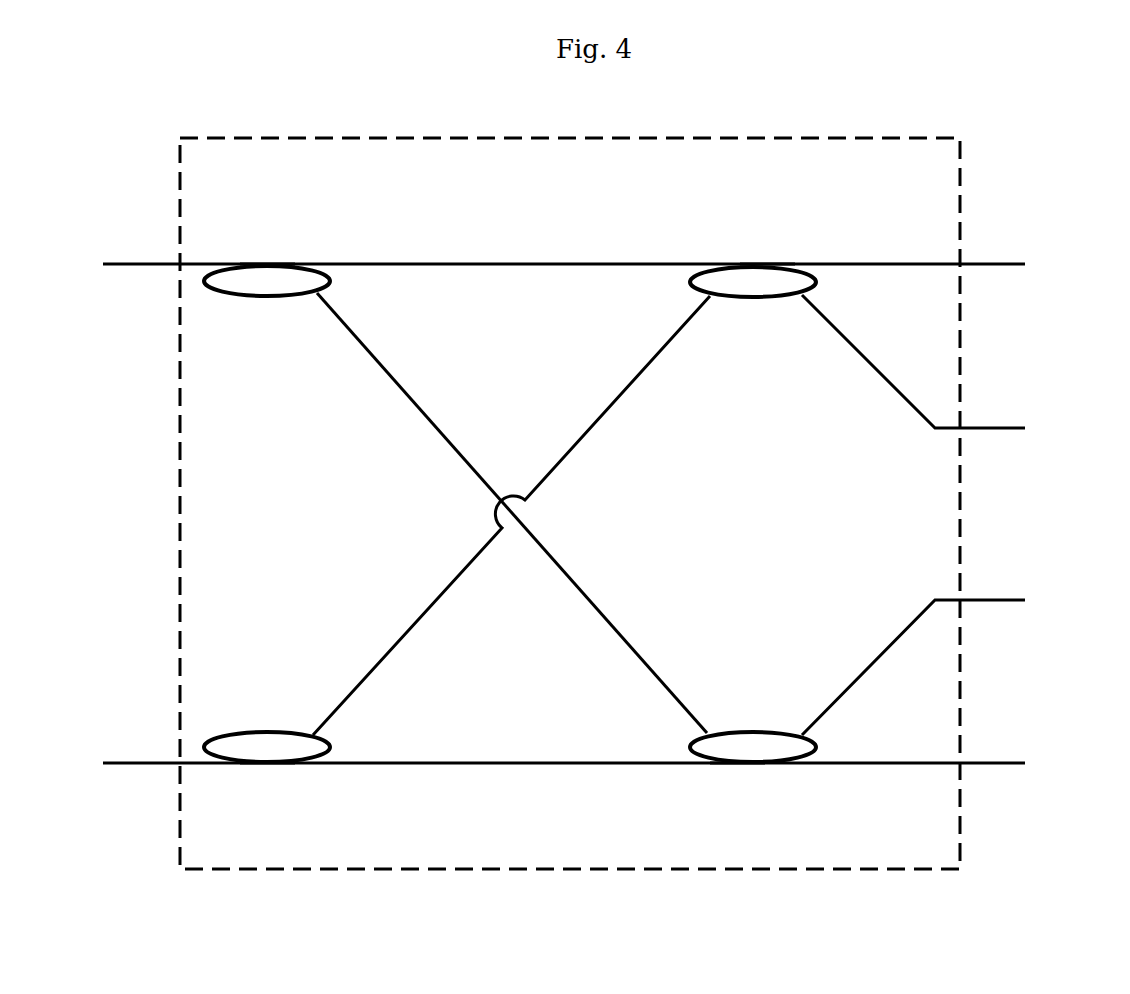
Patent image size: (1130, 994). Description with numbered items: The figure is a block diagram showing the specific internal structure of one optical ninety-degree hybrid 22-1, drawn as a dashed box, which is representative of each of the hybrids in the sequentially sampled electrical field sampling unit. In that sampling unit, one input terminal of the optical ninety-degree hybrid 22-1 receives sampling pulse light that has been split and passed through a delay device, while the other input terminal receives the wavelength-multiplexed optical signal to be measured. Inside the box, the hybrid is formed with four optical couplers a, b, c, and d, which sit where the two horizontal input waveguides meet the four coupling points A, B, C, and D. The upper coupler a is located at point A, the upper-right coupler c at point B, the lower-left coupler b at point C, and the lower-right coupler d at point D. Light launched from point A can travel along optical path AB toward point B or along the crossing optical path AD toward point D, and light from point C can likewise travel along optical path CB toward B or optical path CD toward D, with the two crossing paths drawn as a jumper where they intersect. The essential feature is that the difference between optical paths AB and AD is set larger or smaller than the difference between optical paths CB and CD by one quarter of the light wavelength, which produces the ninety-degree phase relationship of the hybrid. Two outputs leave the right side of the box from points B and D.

The optical 90-degree hybrid 22-1 is at (960, 200).
The optical coupler port A is at (267, 313).
The optical coupler port B is at (753, 313).
The optical coupler port C is at (267, 719).
The optical coupler port D is at (753, 719).
The optical coupler a is at (268, 260).
The optical coupler b is at (264, 765).
The optical coupler c is at (766, 261).
The optical coupler d is at (735, 765).